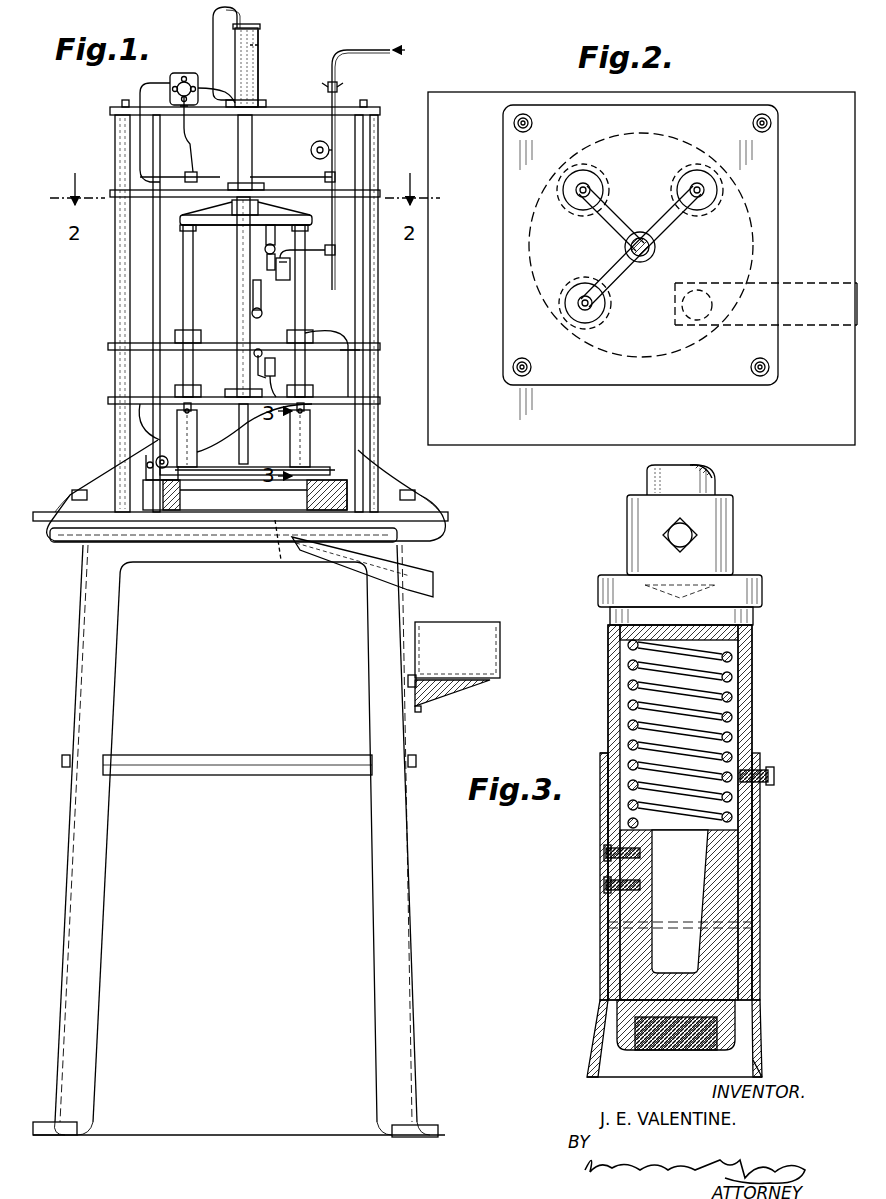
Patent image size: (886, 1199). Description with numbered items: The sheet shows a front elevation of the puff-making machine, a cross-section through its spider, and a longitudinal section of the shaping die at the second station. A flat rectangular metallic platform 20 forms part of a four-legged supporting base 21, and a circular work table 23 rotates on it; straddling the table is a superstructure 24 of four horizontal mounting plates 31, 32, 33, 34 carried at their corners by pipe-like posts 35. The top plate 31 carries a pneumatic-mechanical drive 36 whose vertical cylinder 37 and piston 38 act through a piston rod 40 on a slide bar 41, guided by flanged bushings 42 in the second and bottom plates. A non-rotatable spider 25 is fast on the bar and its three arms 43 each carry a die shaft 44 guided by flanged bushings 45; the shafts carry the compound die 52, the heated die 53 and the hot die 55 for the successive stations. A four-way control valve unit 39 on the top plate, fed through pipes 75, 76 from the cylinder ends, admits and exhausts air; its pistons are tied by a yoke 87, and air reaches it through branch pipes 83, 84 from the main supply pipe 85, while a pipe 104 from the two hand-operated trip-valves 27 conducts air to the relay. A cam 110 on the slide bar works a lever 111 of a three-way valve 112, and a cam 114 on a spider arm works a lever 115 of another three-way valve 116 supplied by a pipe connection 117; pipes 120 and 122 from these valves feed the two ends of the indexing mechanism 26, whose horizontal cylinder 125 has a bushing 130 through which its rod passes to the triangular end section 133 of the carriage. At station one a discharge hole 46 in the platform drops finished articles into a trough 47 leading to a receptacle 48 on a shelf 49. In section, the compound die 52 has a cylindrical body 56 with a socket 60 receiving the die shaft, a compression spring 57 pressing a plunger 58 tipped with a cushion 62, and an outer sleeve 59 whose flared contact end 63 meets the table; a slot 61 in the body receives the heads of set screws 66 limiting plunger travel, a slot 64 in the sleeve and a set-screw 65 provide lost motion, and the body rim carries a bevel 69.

In FIG. 1, the platform 20 is at (448, 517).
In FIG. 2, the platform 20 is at (835, 445).
In FIG. 1, the supporting base 21 is at (417, 898).
In FIG. 1, the work table 23 is at (240, 510).
In FIG. 1, the superstructure 24 is at (380, 150).
In FIG. 1, the spider 25 is at (208, 210).
In FIG. 2, the spider 25 is at (624, 241).
In FIG. 1, the indexing mechanism 26 is at (320, 466).
In FIG. 1, the trip-valves 27 is at (75, 490).
In FIG. 1, the top mounting plate 31 is at (110, 110).
In FIG. 1, the mounting plate 32 is at (112, 190).
In FIG. 1, the mounting plate 33 is at (108, 344).
In FIG. 2, the mounting plate 33 is at (778, 183).
In FIG. 1, the mounting plate 34 is at (108, 398).
In FIG. 1, the posts 35 is at (115, 292).
In FIG. 2, the posts 35 is at (514, 126).
In FIG. 1, the pneumatic-mechanical drive 36 is at (262, 40).
In FIG. 1, the cylinder 37 is at (258, 75).
In FIG. 1, the piston 38 is at (258, 45).
In FIG. 1, the control valve unit 39 is at (184, 73).
In FIG. 1, the piston rod 40 is at (254, 118).
In FIG. 1, the slide bar 41 is at (237, 328).
In FIG. 2, the slide bar 41 is at (656, 248).
In FIG. 1, the flanged bushings 42 is at (250, 183).
In FIG. 1, the arms 43 is at (228, 226).
In FIG. 2, the arms 43 is at (663, 213).
In FIG. 1, the die shaft 44 is at (193, 285).
In FIG. 2, the die shaft 44 is at (690, 185).
In FIG. 3, the die shaft 44 is at (716, 478).
In FIG. 1, the flanged bushings 45 is at (178, 343).
In FIG. 1, the discharge hole 46 is at (285, 560).
In FIG. 2, the discharge hole 46 is at (712, 305).
In FIG. 1, the trough 47 is at (434, 576).
In FIG. 2, the trough 47 is at (800, 283).
In FIG. 1, the receptacle 48 is at (480, 623).
In FIG. 1, the shelf 49 is at (458, 692).
In FIG. 1, the compound die 52 is at (288, 433).
In FIG. 2, the compound die 52 is at (698, 170).
In FIG. 3, the compound die 52 is at (756, 650).
In FIG. 2, the die 53 is at (584, 170).
In FIG. 1, the hot die 55 is at (197, 448).
In FIG. 2, the hot die 55 is at (565, 303).
In FIG. 3, the body 56 is at (608, 660).
In FIG. 3, the compression spring 57 is at (730, 705).
In FIG. 3, the plunger 58 is at (738, 860).
In FIG. 3, the outer sleeve 59 is at (600, 975).
In FIG. 3, the socket 60 is at (742, 722).
In FIG. 3, the slot 61 is at (603, 808).
In FIG. 3, the tip 62 is at (668, 1050).
In FIG. 3, the contact end 63 is at (762, 1077).
In FIG. 3, the slot 64 is at (760, 818).
In FIG. 3, the set-screw 65 is at (774, 777).
In FIG. 3, the set screws 66 is at (603, 886).
In FIG. 3, the bevel 69 is at (604, 928).
In FIG. 1, the air conducting pipe 75 is at (212, 22).
In FIG. 1, the air conducting pipe 76 is at (221, 86).
In FIG. 1, the branch pipe 83 is at (194, 157).
In FIG. 1, the branch pipe 84 is at (295, 175).
In FIG. 1, the main air-pressure supply pipe 85 is at (375, 57).
In FIG. 1, the yoke 87 is at (184, 106).
In FIG. 1, the pipe 104 is at (153, 257).
In FIG. 1, the cam 110 is at (252, 312).
In FIG. 1, the lever 111 is at (254, 355).
In FIG. 1, the three-way valve 112 is at (288, 377).
In FIG. 1, the cam 114 is at (272, 226).
In FIG. 1, the lever 115 is at (266, 260).
In FIG. 1, the three-way valve 116 is at (290, 268).
In FIG. 1, the pipe connection 117 is at (322, 252).
In FIG. 1, the pipe 120 is at (350, 335).
In FIG. 1, the pipe 122 is at (225, 428).
In FIG. 1, the cylinder 125 is at (245, 468).
In FIG. 1, the bushing 130 is at (160, 456).
In FIG. 1, the end section 133 is at (146, 460).